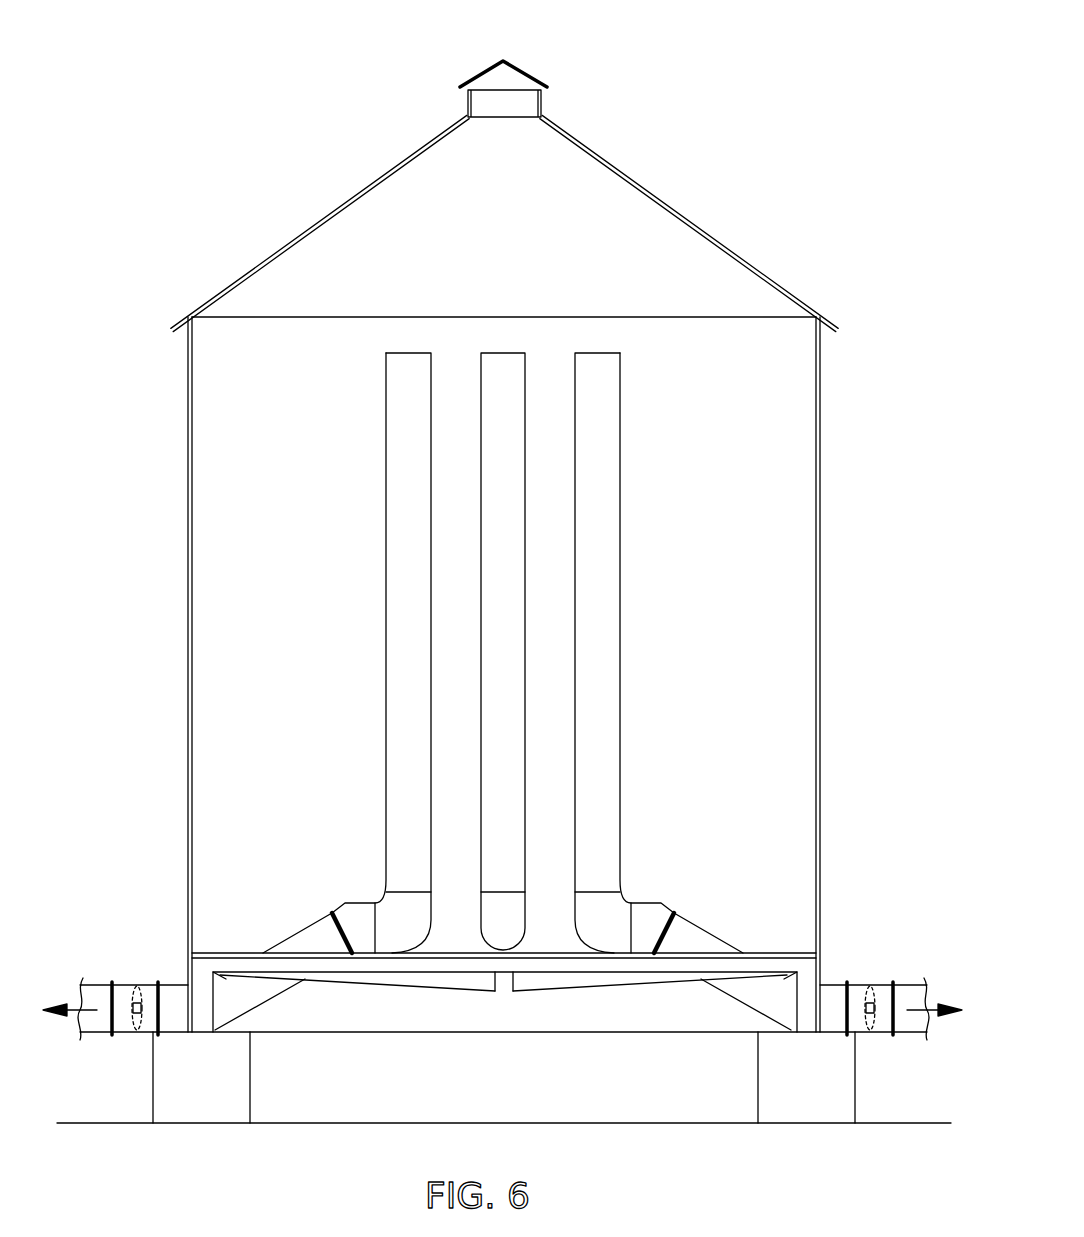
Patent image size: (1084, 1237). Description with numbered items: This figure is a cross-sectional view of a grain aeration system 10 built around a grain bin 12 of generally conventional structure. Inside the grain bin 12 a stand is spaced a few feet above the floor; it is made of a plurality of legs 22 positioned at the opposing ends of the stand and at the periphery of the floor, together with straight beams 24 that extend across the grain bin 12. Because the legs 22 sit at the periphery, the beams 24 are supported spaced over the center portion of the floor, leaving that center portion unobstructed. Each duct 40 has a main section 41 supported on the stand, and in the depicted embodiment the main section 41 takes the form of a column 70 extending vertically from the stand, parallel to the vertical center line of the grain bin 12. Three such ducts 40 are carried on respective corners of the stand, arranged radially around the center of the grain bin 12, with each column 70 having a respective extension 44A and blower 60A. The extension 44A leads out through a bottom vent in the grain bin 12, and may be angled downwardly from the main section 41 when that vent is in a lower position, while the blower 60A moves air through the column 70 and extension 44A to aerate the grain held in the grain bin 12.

The grain aeration system 10 is at (780, 195).
The grain bin 12 is at (820, 417).
The legs 22 is at (207, 1000).
The beams 24 is at (765, 963).
The duct 40 is at (472, 363).
The main section 41 is at (395, 623).
The extension 44A is at (295, 940).
The blower 60A is at (125, 1032).
The column 70 is at (513, 396).